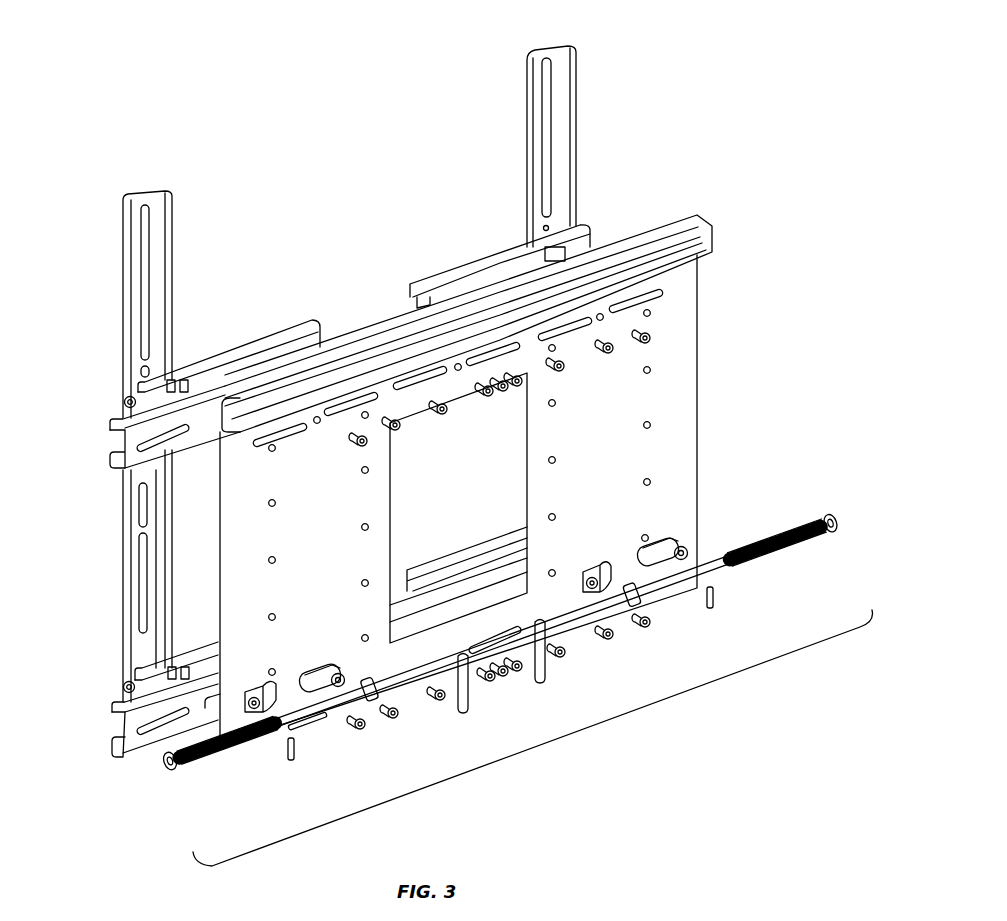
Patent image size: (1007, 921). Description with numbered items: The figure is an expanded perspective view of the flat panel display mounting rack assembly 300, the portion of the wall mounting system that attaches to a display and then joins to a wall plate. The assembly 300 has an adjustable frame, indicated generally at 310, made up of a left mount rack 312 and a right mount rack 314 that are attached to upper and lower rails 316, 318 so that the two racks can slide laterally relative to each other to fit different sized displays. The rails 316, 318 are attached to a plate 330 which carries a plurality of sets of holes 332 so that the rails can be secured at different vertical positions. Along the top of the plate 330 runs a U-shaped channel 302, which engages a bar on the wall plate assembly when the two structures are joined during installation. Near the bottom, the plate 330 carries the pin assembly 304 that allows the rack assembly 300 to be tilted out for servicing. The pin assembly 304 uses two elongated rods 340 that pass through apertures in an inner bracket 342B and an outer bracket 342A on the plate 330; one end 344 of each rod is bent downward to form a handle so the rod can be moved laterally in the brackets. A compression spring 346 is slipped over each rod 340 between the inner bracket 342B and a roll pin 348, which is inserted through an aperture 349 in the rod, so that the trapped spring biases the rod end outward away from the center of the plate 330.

The flat panel display mounting rack assembly 300 is at (378, 140).
The U-shaped channel 302 is at (705, 234).
The pin assembly 304 is at (542, 746).
The column assembly 310 is at (100, 197).
The left mount rack 312 is at (560, 45).
The right mount rack 314 is at (150, 193).
The rail 316 is at (150, 428).
The rail 318 is at (140, 742).
The plate 330 is at (685, 405).
The sets of holes 332 is at (648, 372).
The elongated rod 340 is at (313, 713).
The outer bracket 342A is at (247, 688).
The inner bracket 342B is at (338, 670).
The bent end of rod 344 is at (537, 683).
The compression spring 346 is at (205, 745).
The roll pin 348 is at (292, 762).
The aperture in rod 349 is at (293, 715).